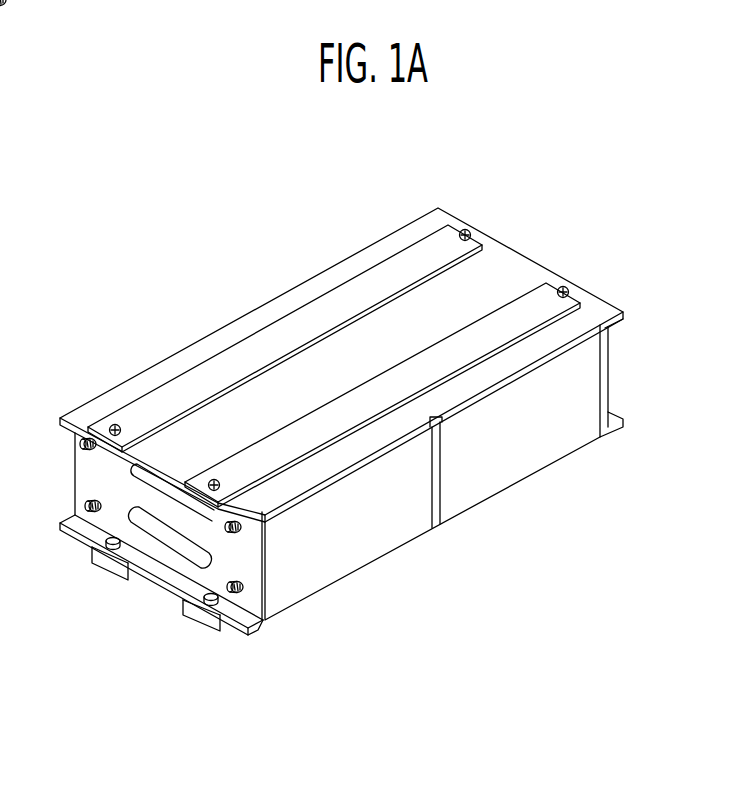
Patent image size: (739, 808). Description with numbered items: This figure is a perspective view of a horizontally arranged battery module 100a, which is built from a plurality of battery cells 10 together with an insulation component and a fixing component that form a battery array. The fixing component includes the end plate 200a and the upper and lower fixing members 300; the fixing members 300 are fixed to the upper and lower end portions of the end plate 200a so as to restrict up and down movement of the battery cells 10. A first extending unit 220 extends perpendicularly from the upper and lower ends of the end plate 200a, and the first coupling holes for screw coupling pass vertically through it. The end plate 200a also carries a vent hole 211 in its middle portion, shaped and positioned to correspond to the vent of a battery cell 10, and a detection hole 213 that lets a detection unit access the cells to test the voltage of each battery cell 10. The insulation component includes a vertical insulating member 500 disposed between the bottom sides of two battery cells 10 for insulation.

The battery cell 10 is at (149, 354).
The battery module 100a is at (120, 214).
The end plate 200a is at (544, 250).
The vent hole 211 is at (168, 538).
The detection hole 213 is at (103, 513).
The first extending unit 220 is at (254, 632).
The fixing member 300 is at (204, 340).
The vertical insulating member 500 is at (433, 512).